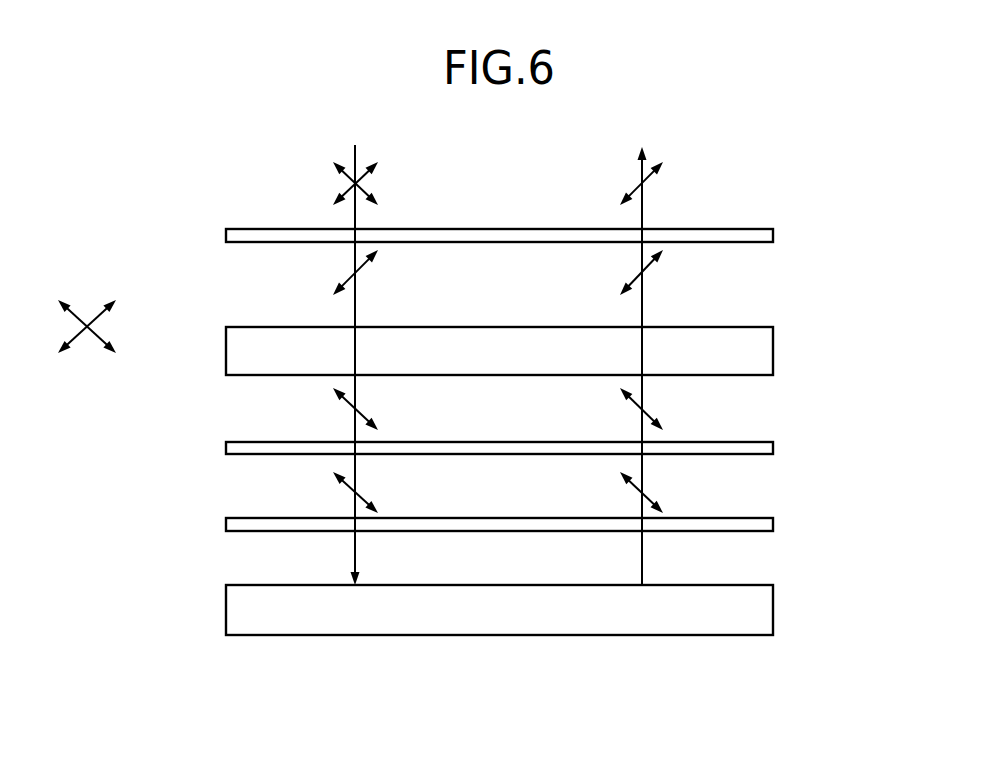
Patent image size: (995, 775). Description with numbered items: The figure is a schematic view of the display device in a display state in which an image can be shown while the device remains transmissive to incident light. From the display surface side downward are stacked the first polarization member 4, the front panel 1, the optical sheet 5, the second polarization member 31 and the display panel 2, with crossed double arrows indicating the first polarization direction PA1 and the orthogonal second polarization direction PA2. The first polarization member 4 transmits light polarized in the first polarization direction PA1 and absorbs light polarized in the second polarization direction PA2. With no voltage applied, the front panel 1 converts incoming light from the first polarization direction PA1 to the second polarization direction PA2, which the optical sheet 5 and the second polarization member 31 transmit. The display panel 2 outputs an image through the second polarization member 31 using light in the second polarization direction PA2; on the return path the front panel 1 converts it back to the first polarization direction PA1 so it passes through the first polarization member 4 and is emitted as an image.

The first polarization member 4 is at (773, 236).
The front panel 1 is at (773, 351).
The optical sheet 5 is at (773, 448).
The second polarization member 31 is at (773, 525).
The display panel 2 is at (773, 614).
The first polarization direction PA1 is at (102, 318).
The second polarization direction PA2 is at (68, 306).